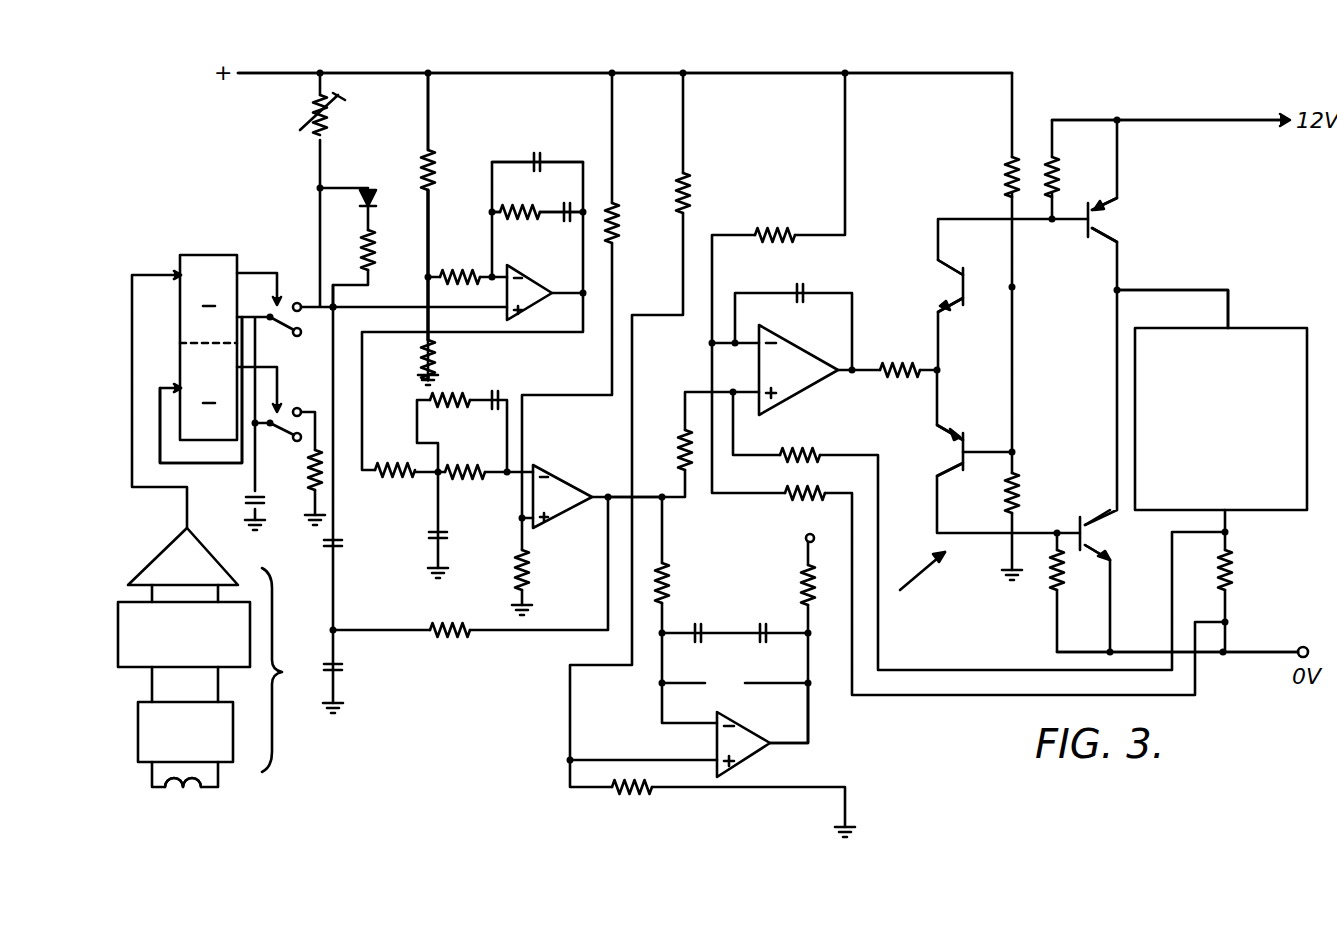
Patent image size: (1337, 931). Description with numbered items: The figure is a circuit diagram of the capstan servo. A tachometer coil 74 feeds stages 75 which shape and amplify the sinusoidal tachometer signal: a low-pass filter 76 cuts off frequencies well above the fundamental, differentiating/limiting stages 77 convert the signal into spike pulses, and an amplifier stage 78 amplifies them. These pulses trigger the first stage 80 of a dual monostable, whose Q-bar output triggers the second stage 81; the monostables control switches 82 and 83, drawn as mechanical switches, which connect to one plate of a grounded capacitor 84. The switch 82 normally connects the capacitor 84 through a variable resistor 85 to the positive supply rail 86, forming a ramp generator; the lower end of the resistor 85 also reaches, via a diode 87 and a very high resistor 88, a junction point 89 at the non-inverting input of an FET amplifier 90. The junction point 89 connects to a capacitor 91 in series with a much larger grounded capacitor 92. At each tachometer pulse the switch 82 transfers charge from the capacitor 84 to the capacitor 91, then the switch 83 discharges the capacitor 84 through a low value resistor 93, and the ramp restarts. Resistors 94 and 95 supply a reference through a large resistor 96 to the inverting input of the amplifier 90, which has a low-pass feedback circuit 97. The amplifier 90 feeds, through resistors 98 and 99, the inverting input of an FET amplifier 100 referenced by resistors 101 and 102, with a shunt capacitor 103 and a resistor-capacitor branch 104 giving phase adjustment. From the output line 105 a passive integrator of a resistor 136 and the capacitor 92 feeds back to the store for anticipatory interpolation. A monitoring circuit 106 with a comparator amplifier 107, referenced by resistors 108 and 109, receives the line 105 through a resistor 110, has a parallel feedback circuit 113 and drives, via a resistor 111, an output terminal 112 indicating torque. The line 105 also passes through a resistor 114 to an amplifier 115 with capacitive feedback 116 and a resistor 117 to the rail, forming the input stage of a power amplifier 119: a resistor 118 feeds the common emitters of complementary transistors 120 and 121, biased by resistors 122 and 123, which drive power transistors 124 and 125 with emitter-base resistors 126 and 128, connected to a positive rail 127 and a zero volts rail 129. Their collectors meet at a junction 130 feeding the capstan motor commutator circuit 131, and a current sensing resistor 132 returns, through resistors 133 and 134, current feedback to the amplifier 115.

The tachometer coil 74 is at (184, 800).
The stages 75 is at (281, 670).
The low-pass filter 76 is at (140, 763).
The differentiating/limiting stages 77 is at (142, 664).
The amplifier stage 78 is at (172, 540).
The first stage of dual monostable circuit 80 is at (212, 255).
The second stage of dual monostable circuit 81 is at (178, 372).
The switch 82 is at (290, 285).
The switch 83 is at (284, 410).
The capacitor 84 is at (244, 492).
The variable resistor 85 is at (307, 110).
The positive supply rail 86 is at (374, 72).
The diode 87 is at (386, 200).
The resistor 88 is at (373, 260).
The junction point 89 is at (331, 296).
The FET comparator amplifier 90 is at (534, 280).
The capacitor 91 is at (324, 548).
The capacitor 92 is at (345, 675).
The resistor 93 is at (309, 478).
The resistor 94 is at (432, 164).
The resistor 95 is at (423, 356).
The resistor 96 is at (459, 270).
The low-pass feedback circuit 97 is at (584, 160).
The resistor 98 is at (406, 478).
The resistor 99 is at (496, 482).
The FET amplifier 100 is at (554, 472).
The resistor 101 is at (616, 212).
The resistor 102 is at (532, 565).
The shunt capacitor 103 is at (457, 540).
The resistor-capacitor branch 104 is at (470, 396).
The output line 105 is at (644, 490).
The monitoring circuit 106 is at (838, 726).
The comparator amplifier 107 is at (765, 754).
The resistor 108 is at (690, 182).
The resistor 109 is at (632, 795).
The resistor 110 is at (666, 590).
The resistor 111 is at (796, 592).
The output terminal 112 is at (798, 552).
The parallel resistive/capacitative feedback circuit 113 is at (750, 618).
The resistor 114 is at (672, 418).
The amplifier 115 is at (802, 396).
The capacitative feedback impedance 116 is at (812, 290).
The resistor 117 is at (786, 232).
The resistor 118 is at (889, 362).
The power amplifier 119 is at (915, 578).
The transistor 120 is at (958, 266).
The transistor 121 is at (962, 426).
The resistor 122 is at (1000, 170).
The resistor 123 is at (1022, 492).
The power transistor 124 is at (1111, 214).
The power transistor 125 is at (1094, 540).
The resistor 126 is at (1061, 170).
The positive rail 127 is at (1216, 114).
The resistor 128 is at (1050, 596).
The zero volts rail 129 is at (1130, 646).
The junction 130 is at (1120, 288).
The capstan motor commutator circuit 131 is at (1250, 326).
The current sensing resistor 132 is at (1232, 569).
The resistor 133 is at (816, 456).
The resistor 134 is at (786, 494).
The resistor 136 is at (440, 638).